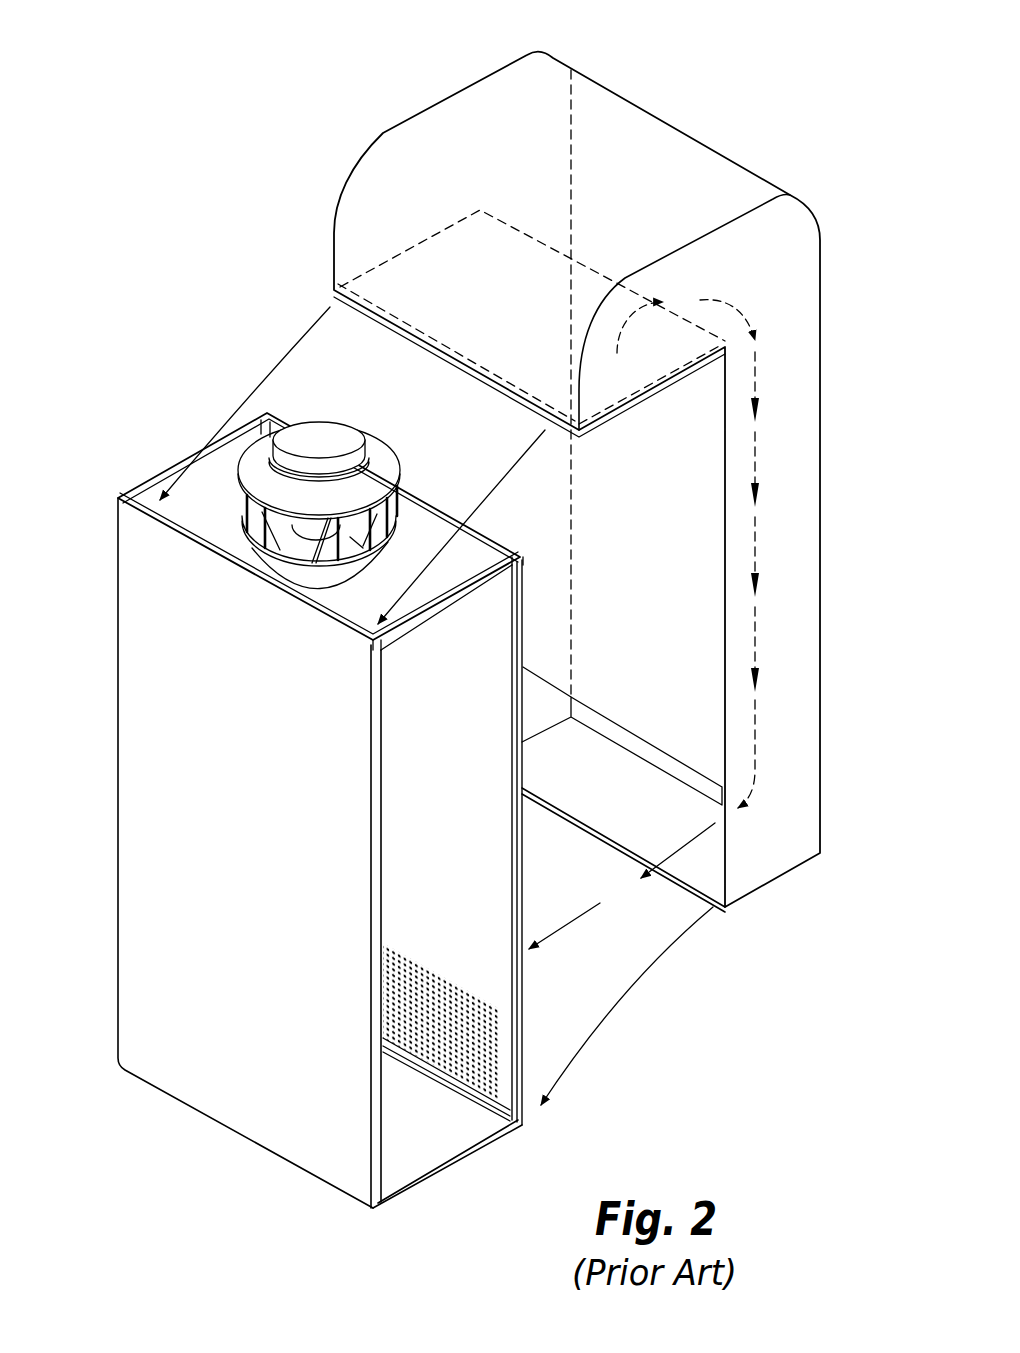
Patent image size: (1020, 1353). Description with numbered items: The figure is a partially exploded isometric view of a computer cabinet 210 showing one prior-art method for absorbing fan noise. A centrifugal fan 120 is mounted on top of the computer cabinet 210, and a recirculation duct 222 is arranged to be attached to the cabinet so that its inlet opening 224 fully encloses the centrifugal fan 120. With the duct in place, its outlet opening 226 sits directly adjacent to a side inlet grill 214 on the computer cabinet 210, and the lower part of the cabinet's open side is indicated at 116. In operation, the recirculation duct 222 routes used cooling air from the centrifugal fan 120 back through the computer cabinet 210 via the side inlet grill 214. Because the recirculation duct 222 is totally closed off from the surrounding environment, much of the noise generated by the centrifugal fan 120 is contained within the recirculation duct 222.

The computer cabinet 210 is at (458, 755).
The bottom opening of cabinet 116 is at (403, 1129).
The side inlet grill 214 is at (506, 1045).
The centrifugal fan 120 is at (283, 530).
The recirculation duct 222 is at (558, 62).
The inlet opening 224 is at (400, 302).
The outlet opening 226 is at (704, 856).